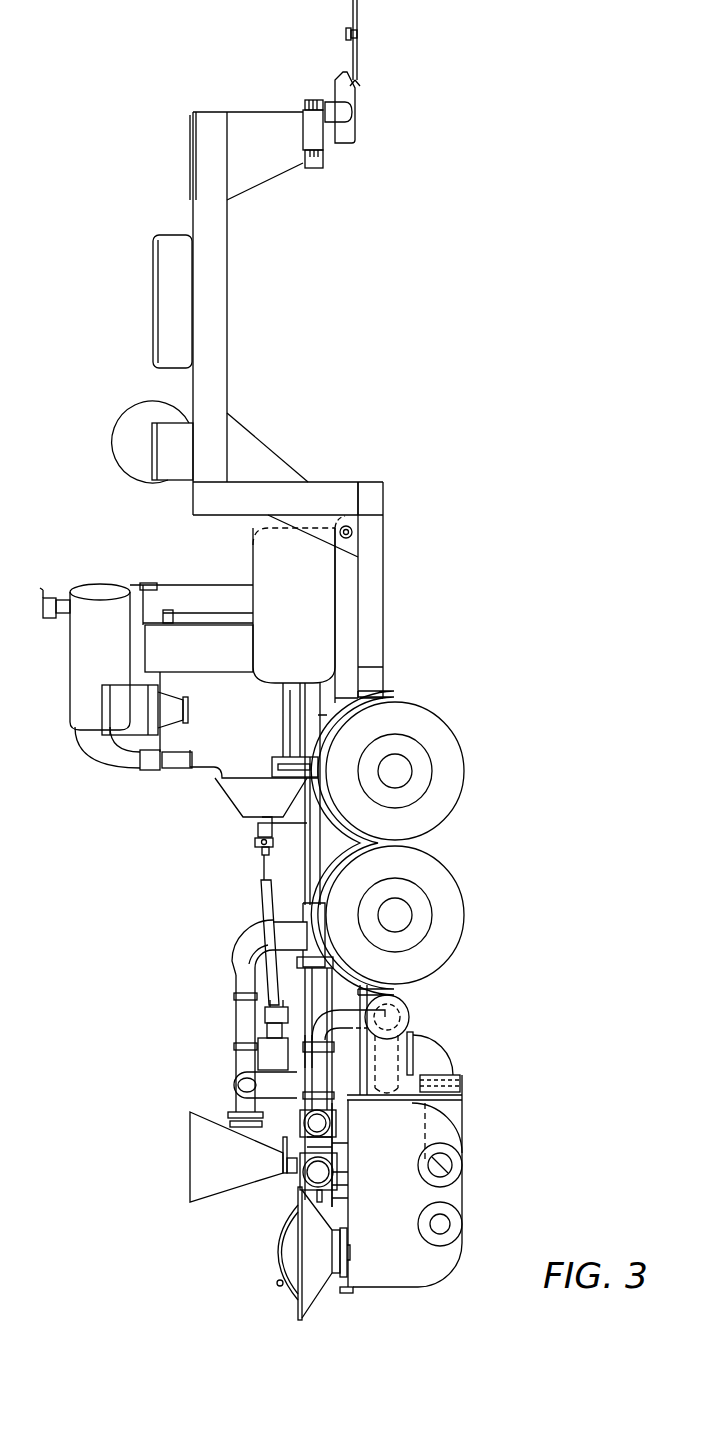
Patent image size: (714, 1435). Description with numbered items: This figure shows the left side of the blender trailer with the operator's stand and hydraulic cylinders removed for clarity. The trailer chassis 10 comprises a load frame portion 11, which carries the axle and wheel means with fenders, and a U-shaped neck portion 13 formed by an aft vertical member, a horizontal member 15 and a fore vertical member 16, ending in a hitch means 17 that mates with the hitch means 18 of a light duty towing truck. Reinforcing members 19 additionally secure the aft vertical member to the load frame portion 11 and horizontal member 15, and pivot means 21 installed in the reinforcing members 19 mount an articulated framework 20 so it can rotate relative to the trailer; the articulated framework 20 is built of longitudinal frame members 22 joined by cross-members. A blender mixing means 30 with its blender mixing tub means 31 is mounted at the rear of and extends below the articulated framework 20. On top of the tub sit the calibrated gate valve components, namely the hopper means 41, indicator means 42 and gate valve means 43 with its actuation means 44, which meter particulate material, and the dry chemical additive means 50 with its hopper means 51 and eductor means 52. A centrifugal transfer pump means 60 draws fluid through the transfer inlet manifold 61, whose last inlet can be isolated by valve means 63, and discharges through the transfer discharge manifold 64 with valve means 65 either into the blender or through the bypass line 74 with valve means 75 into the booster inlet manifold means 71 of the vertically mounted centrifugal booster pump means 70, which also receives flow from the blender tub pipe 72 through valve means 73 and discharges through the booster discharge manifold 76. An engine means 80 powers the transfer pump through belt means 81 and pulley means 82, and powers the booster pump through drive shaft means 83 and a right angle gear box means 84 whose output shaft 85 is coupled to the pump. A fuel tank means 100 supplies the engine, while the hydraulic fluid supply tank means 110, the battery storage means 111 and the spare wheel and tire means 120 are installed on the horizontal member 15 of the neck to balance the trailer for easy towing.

The trailer chassis 10 is at (378, 556).
The load frame portion 11 is at (370, 545).
The U-shaped neck portion 13 is at (210, 302).
The horizontal member 15 is at (215, 337).
The fore vertical member 16 is at (257, 168).
The hitch means 17 is at (343, 113).
The hitch means of the truck 18 is at (358, 31).
The reinforcing members 19 is at (250, 450).
The articulated framework 20 is at (348, 613).
The pivot means 21 is at (353, 527).
The longitudinal frame members 22 is at (360, 1017).
The blender mixing means 30 is at (420, 1272).
The blender mixing tub means 31 is at (437, 1252).
The hopper means 41 is at (313, 1263).
The indicator means 42 is at (278, 1262).
The gate valve means 43 is at (340, 1250).
The actuation means 44 is at (278, 1285).
The dry chemical additive means 50 is at (297, 1165).
The hopper means 51 is at (232, 1162).
The eductor means 52 is at (290, 1162).
The centrifugal transfer pump means 60 is at (290, 932).
The transfer inlet manifold 61 is at (317, 983).
The valve means 63 is at (300, 1131).
The transfer discharge manifold 64 is at (245, 1003).
The valve means 65 is at (240, 1118).
The centrifugal booster pump means 70 is at (397, 1017).
The booster inlet manifold means 71 is at (418, 1048).
The blender tub pipe 72 is at (443, 1112).
The valve means 73 is at (455, 1085).
The bypass line 74 is at (282, 1083).
The valve means 75 is at (232, 1080).
The booster discharge manifold 76 is at (322, 1022).
The engine means 80 is at (237, 757).
The belt means 81 is at (300, 823).
The pulley means 82 is at (256, 838).
The drive shaft means 83 is at (264, 892).
The right angle gear box means 84 is at (298, 1050).
The output shaft 85 is at (298, 1055).
The fuel tank means 100 is at (276, 553).
The hydraulic fluid supply tank means 110 is at (140, 428).
The battery storage means 111 is at (185, 472).
The spare wheel and tire means 120 is at (175, 272).